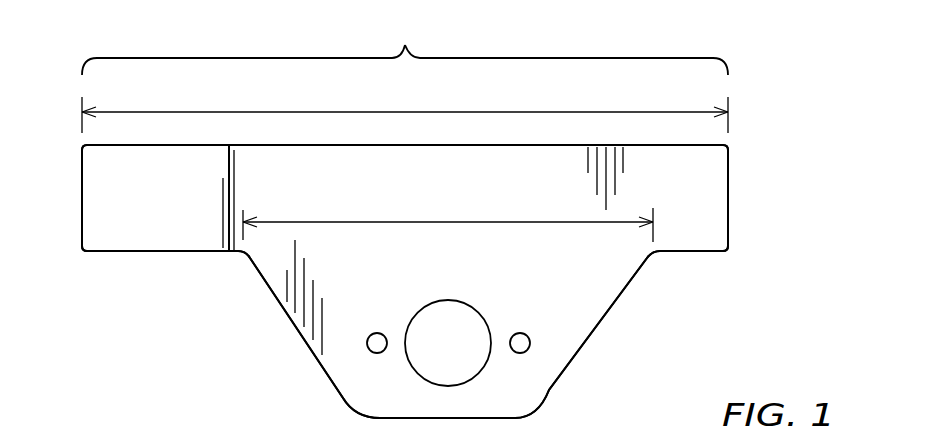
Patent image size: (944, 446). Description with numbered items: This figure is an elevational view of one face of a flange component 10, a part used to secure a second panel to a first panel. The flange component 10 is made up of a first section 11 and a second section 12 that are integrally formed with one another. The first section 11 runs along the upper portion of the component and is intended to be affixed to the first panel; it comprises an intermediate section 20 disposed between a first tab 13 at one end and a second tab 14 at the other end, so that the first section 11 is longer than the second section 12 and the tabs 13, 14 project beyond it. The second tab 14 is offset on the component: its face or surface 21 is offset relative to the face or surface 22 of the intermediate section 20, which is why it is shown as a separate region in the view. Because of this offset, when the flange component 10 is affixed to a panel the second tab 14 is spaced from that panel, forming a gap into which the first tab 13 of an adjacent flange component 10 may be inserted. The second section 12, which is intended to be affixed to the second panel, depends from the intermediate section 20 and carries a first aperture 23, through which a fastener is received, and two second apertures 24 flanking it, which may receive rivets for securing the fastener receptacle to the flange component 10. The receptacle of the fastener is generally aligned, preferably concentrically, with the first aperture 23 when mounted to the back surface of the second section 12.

The flange component 10 is at (757, 130).
The first section 11 is at (405, 45).
The second section 12 is at (580, 318).
The first tab 13 is at (692, 225).
The second tab 14 is at (155, 218).
The intermediate section 20 is at (510, 222).
The face or surface of the second tab 21 is at (172, 190).
The face or surface of the component or intermediate section 22 is at (366, 190).
The first aperture 23 is at (441, 300).
The second apertures 24 is at (367, 347).